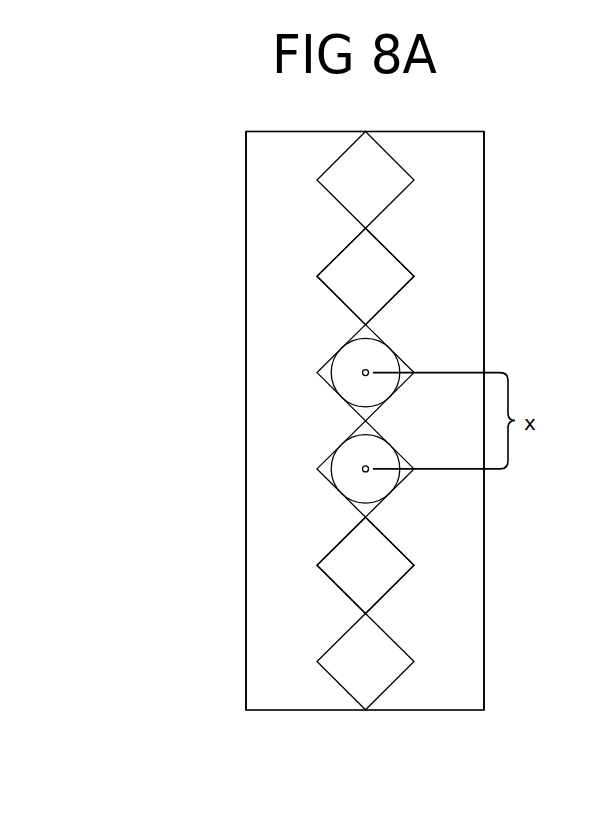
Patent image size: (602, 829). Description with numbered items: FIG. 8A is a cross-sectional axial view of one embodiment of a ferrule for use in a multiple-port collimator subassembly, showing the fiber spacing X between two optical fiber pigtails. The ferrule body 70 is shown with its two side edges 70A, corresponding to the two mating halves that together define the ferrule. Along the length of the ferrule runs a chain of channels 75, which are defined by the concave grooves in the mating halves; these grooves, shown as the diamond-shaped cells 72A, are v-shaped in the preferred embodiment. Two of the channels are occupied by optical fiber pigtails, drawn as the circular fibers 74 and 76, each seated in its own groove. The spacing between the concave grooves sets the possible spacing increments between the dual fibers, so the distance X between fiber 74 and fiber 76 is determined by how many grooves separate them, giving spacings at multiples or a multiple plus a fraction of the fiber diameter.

The sheet / panel 70 is at (234, 699).
The side edges of sheet 70A is at (263, 191).
The diamond pattern 75 is at (369, 174).
The diamond cells 72A is at (408, 273).
The first hole / circle 74 is at (350, 363).
The second hole / circle 76 is at (383, 482).